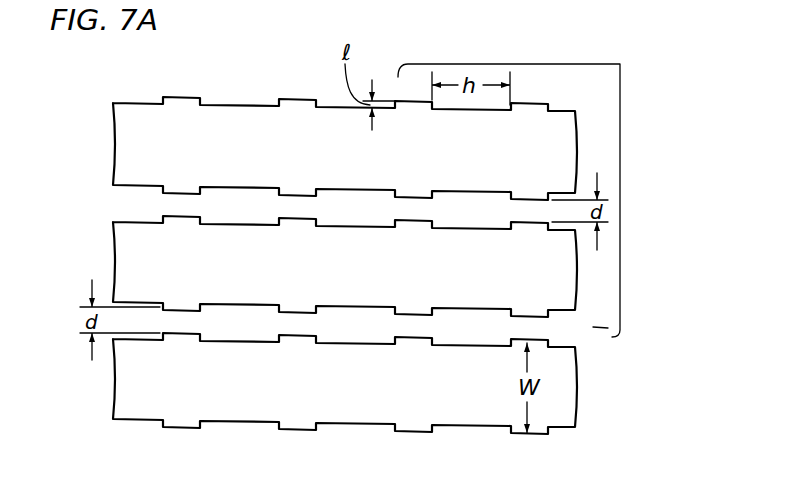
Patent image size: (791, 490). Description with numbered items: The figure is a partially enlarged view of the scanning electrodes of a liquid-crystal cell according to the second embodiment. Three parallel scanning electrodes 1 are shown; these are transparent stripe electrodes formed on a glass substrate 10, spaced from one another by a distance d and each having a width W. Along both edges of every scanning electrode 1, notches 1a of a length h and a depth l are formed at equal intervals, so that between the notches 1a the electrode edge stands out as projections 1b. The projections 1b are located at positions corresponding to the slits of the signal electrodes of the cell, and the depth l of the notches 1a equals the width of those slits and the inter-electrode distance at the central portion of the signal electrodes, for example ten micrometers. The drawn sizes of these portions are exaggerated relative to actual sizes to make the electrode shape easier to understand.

The scanning electrode 1 is at (565, 146).
The notch 1a is at (240, 103).
The projection 1b is at (298, 97).
The glass substrate 10 is at (590, 74).